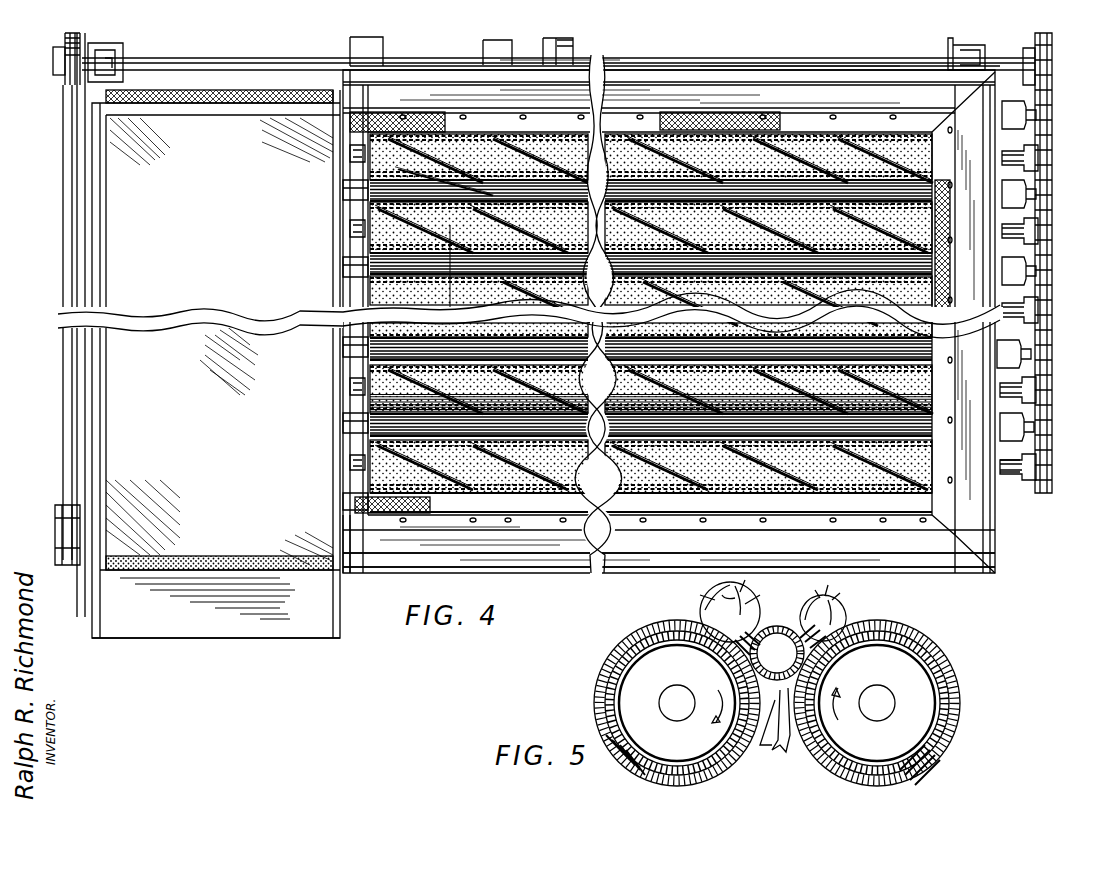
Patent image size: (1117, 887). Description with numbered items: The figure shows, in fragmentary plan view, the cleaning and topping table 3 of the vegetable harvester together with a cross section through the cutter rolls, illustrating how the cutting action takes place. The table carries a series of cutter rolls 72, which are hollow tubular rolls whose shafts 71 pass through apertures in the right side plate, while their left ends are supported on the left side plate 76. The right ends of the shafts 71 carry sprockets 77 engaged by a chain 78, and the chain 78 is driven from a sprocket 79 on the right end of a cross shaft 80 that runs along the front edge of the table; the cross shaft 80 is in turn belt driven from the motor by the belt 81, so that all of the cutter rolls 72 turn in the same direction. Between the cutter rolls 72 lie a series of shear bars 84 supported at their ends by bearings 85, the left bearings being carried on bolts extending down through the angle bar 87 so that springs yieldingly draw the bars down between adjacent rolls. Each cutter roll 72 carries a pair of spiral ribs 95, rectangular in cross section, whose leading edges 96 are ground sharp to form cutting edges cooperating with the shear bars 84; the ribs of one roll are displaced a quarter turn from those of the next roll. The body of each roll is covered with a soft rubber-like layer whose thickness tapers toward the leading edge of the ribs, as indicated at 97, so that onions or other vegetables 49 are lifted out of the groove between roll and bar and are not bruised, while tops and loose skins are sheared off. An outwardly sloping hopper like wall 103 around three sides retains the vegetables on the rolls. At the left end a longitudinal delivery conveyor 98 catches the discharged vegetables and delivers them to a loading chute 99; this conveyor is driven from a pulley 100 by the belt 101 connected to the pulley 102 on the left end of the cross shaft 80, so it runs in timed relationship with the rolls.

In FIG. 4, the cleaning and topping table 3 is at (998, 535).
In FIG. 5, the onions or other vegetables 49 is at (845, 625).
In FIG. 4, the shafts 71 is at (1000, 455).
In FIG. 4, the cutter rolls 72 is at (885, 490).
In FIG. 5, the cutter rolls 72 is at (930, 665).
In FIG. 4, the left side plate 76 is at (368, 484).
In FIG. 4, the sprockets 77 is at (1030, 468).
In FIG. 4, the chain 78 is at (1052, 110).
In FIG. 4, the sprocket 79 is at (1030, 62).
In FIG. 4, the cross shaft 80 is at (790, 56).
In FIG. 4, the belt 81 is at (560, 42).
In FIG. 4, the shear bars 84 is at (367, 262).
In FIG. 5, the shear bars 84 is at (777, 625).
In FIG. 4, the bearings 85 is at (343, 420).
In FIG. 4, the angle bar 87 is at (345, 565).
In FIG. 4, the spiral ribs 95 is at (370, 290).
In FIG. 5, the spiral ribs 95 is at (880, 775).
In FIG. 5, the leading edges 96 is at (870, 650).
In FIG. 5, the tapered covering 97 is at (890, 660).
In FIG. 4, the delivery conveyor 98 is at (120, 258).
In FIG. 4, the loading chute 99 is at (140, 628).
In FIG. 4, the pulley 100 is at (55, 522).
In FIG. 4, the belt 101 is at (62, 395).
In FIG. 4, the pulley 102 is at (58, 78).
In FIG. 4, the hopper like wall 103 is at (965, 505).